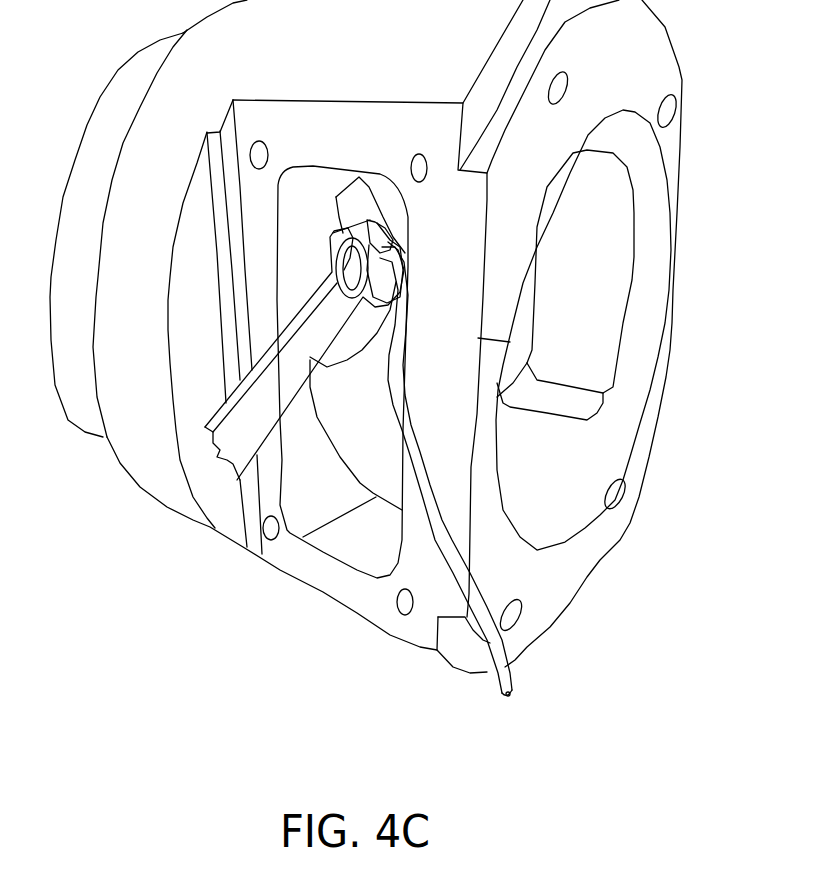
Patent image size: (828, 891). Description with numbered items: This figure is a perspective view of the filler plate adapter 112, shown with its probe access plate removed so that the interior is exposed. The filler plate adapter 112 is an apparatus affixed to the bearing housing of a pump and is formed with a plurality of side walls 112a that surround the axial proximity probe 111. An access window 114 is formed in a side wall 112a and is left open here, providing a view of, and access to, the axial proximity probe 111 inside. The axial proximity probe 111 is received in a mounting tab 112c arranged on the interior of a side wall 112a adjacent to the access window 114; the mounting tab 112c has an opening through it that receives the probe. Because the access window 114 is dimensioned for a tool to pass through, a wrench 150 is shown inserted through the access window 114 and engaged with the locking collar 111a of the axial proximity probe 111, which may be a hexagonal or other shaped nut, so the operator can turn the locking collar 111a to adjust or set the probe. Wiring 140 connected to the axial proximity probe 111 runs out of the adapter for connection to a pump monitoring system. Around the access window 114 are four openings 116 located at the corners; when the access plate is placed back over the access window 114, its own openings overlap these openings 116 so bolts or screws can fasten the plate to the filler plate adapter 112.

The axial proximity probe 111 is at (373, 222).
The locking collar 111a is at (336, 227).
The filler plate adapter 112 is at (570, 577).
The side wall 112a is at (480, 420).
The mounting tab 112c is at (326, 260).
The access window 114 is at (340, 470).
The opening 116 is at (258, 147).
The wiring 140 is at (513, 680).
The wrench 150 is at (275, 388).